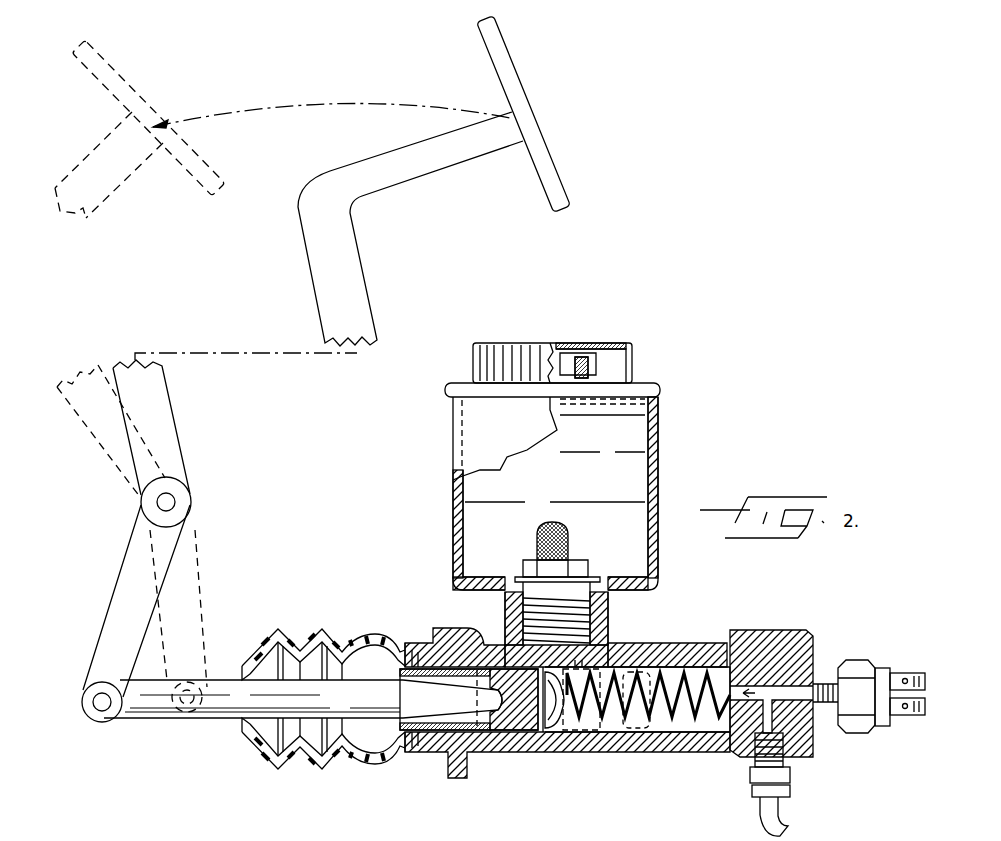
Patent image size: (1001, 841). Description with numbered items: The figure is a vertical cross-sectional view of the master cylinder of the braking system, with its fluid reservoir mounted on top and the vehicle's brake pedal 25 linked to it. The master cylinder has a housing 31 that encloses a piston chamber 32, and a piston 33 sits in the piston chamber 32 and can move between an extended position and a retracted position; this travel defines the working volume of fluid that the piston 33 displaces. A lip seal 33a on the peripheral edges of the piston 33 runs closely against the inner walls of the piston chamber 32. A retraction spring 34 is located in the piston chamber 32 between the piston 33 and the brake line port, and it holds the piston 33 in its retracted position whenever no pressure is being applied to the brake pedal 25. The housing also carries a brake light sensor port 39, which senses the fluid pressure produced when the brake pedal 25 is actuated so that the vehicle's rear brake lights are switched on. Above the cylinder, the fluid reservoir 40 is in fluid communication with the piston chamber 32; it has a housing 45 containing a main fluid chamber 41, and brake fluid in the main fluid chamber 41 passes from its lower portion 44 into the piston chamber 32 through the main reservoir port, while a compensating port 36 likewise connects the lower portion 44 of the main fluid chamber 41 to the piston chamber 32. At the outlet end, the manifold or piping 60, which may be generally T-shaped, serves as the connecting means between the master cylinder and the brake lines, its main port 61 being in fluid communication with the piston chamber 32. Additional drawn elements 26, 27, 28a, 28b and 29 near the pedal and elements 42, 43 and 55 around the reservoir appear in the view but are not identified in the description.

The brake pedal 25 is at (533, 109).
The pedal arm 26 is at (338, 238).
The lever arm 27 is at (167, 553).
The pivot 28a is at (183, 497).
The pivot pin 28b is at (100, 713).
The push rod 29 is at (220, 677).
The housing 31 is at (745, 690).
The piston chamber 32 is at (723, 670).
The piston 33 is at (542, 750).
The lip seal 33a is at (553, 737).
The retraction spring 34 is at (710, 713).
The compensating port 36 is at (580, 665).
The brake light sensor port 39 is at (827, 677).
The fluid reservoir 40 is at (681, 452).
The main fluid chamber 41 is at (633, 522).
The filter 42 is at (567, 530).
The reservoir cap 43 is at (512, 360).
The lower portion 44 is at (633, 577).
The housing 45 is at (653, 420).
The reservoir neck 55 is at (510, 617).
The manifold or piping 60 is at (804, 812).
The main port 61 is at (777, 740).